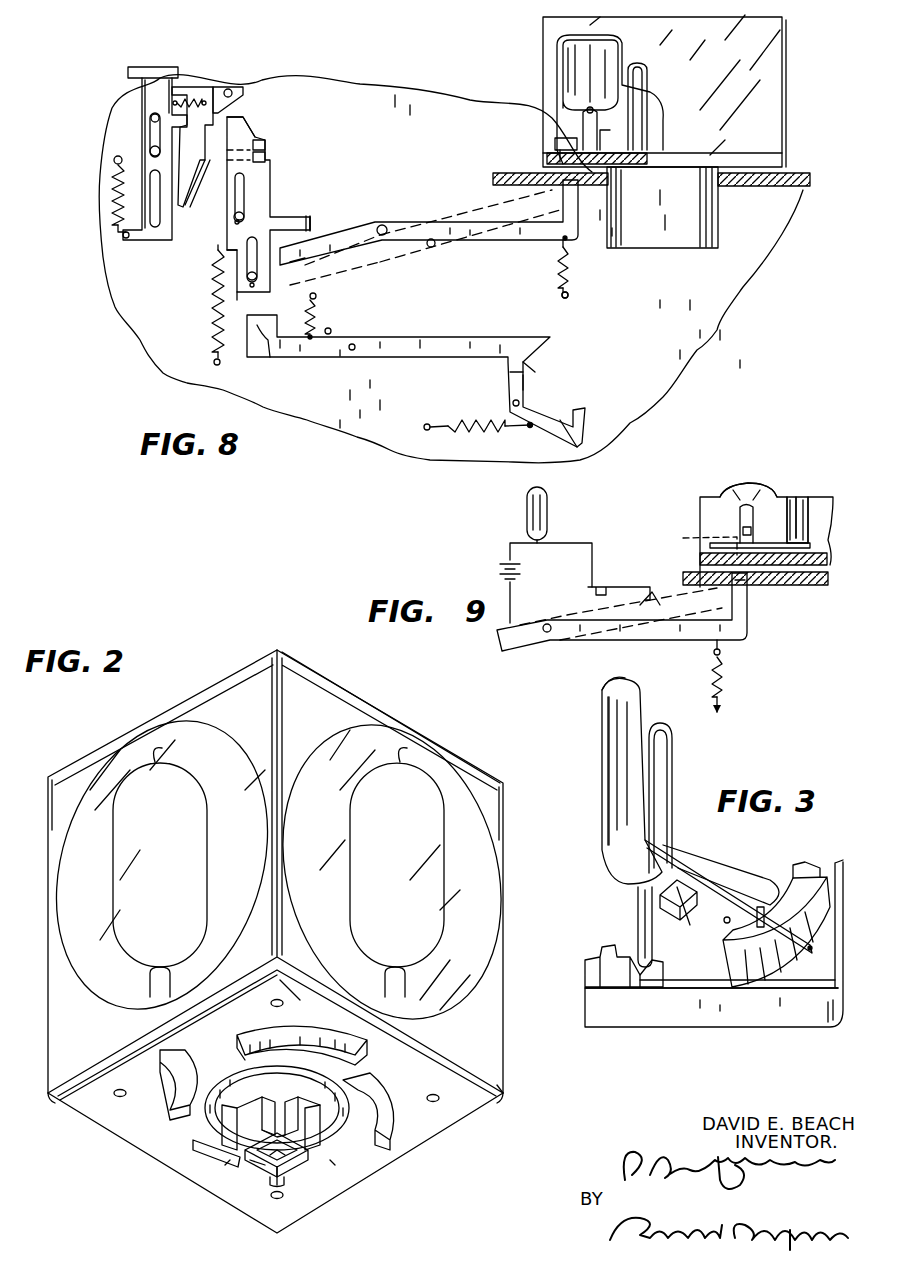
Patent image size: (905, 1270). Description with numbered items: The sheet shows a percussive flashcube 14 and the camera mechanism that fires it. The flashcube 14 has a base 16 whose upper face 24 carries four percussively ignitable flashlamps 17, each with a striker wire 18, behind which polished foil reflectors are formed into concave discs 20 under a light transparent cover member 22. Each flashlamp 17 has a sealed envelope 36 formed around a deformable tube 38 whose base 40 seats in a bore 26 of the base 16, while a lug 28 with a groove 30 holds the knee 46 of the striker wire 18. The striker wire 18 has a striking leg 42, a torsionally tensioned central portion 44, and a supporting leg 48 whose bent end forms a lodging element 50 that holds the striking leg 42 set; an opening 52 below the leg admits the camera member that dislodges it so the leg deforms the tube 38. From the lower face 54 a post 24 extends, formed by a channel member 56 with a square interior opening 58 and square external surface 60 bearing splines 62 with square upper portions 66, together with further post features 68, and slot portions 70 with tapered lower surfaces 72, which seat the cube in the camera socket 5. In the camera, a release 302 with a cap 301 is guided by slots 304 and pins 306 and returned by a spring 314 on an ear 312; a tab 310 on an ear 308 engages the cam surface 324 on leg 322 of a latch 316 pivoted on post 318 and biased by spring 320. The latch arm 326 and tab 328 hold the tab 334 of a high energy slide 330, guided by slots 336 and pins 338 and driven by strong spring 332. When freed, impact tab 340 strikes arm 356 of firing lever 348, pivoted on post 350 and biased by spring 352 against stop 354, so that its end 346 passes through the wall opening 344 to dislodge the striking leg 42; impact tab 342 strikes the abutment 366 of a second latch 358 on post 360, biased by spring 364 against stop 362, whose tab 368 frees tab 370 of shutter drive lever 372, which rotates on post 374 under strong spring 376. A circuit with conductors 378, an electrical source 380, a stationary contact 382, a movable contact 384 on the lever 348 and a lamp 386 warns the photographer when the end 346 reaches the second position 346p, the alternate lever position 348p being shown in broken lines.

In FIG. 8, the camera socket 5 is at (685, 240).
In FIG. 8, the flashcube 14 is at (785, 140).
In FIG. 9, the flashcube 14 is at (770, 485).
In FIG. 3, the flashcube 14 is at (597, 727).
In FIG. 2, the flashcube 14 is at (165, 700).
In FIG. 3, the base 16 is at (795, 1020).
In FIG. 2, the base 16 is at (495, 1083).
In FIG. 8, the flashlamp 17 is at (566, 72).
In FIG. 3, the flashlamp 17 is at (607, 770).
In FIG. 2, the flashlamp 17 is at (200, 805).
In FIG. 3, the striker wire 18 is at (745, 890).
In FIG. 2, the concave discs 20 is at (210, 740).
In FIG. 2, the cover member 22 is at (345, 690).
In FIG. 3, the post 24 is at (678, 990).
In FIG. 2, the post 24 is at (297, 1162).
In FIG. 3, the bore 26 is at (640, 988).
In FIG. 3, the lug 28 is at (678, 912).
In FIG. 3, the groove 30 is at (680, 872).
In FIG. 8, the envelope 36 is at (572, 58).
In FIG. 3, the envelope 36 is at (602, 750).
In FIG. 8, the tube 38 is at (575, 128).
In FIG. 9, the tube 38 is at (735, 484).
In FIG. 3, the tube 38 is at (640, 912).
In FIG. 2, the tube 38 is at (148, 980).
In FIG. 3, the base of tube 40 is at (667, 965).
In FIG. 8, the striking leg 42 is at (616, 145).
In FIG. 9, the striking leg 42 is at (740, 525).
In FIG. 3, the striking leg 42 is at (790, 950).
In FIG. 2, the striking leg 42 is at (262, 1025).
In FIG. 8, the central portion 44 is at (645, 92).
In FIG. 9, the central portion 44 is at (805, 518).
In FIG. 3, the central portion 44 is at (672, 770).
In FIG. 3, the knee 46 is at (694, 915).
In FIG. 3, the supporting leg 48 is at (724, 924).
In FIG. 8, the lodging element 50 is at (600, 100).
In FIG. 3, the lodging element 50 is at (762, 905).
In FIG. 8, the opening 52 is at (569, 141).
In FIG. 9, the opening 52 is at (764, 525).
In FIG. 3, the opening 52 is at (828, 905).
In FIG. 2, the opening 52 is at (307, 1030).
In FIG. 2, the lower face 54 is at (470, 1120).
In FIG. 2, the channel member 56 is at (288, 1178).
In FIG. 2, the square interior opening 58 is at (268, 1175).
In FIG. 2, the external surface 60 is at (255, 1168).
In FIG. 2, the splines 62 is at (300, 1085).
In FIG. 2, the upper portion 66 is at (345, 1100).
In FIG. 2, the post 68 is at (220, 1140).
In FIG. 2, the slot portions 70 is at (258, 1085).
In FIG. 2, the tapered lower surface 72 is at (277, 1135).
In FIG. 8, the cap 301 is at (150, 67).
In FIG. 8, the release 302 is at (140, 105).
In FIG. 8, the slots 304 is at (148, 120).
In FIG. 8, the pins 306 is at (150, 153).
In FIG. 8, the ear 308 is at (180, 117).
In FIG. 8, the tab 310 is at (199, 147).
In FIG. 8, the ear 312 is at (123, 240).
In FIG. 8, the spring 314 is at (113, 186).
In FIG. 8, the latch 316 is at (217, 110).
In FIG. 8, the post 318 is at (229, 89).
In FIG. 8, the spring 320 is at (188, 99).
In FIG. 8, the leg 322 is at (209, 190).
In FIG. 8, the cam surface 324 is at (218, 155).
In FIG. 8, the arm 326 is at (266, 156).
In FIG. 8, the tab 328 is at (266, 145).
In FIG. 8, the high energy slide 330 is at (262, 222).
In FIG. 8, the spring 332 is at (212, 300).
In FIG. 8, the tab 334 is at (250, 137).
In FIG. 8, the slots 336 is at (245, 190).
In FIG. 8, the pins 338 is at (235, 222).
In FIG. 8, the impact tab 340 is at (312, 224).
In FIG. 8, the impact tab 342 is at (238, 300).
In FIG. 8, the opening 344 is at (528, 175).
In FIG. 8, the end of firing lever 346 is at (580, 222).
In FIG. 9, the end of firing lever 346 is at (750, 602).
In FIG. 9, the second position 346p is at (737, 537).
In FIG. 8, the firing lever 348 is at (512, 236).
In FIG. 9, the firing lever 348 is at (620, 632).
In FIG. 8, the bar alternate position 348p is at (437, 215).
In FIG. 8, the post 350 is at (382, 224).
In FIG. 9, the post 350 is at (545, 622).
In FIG. 8, the spring 352 is at (568, 288).
In FIG. 9, the spring 352 is at (724, 670).
In FIG. 8, the stop 354 is at (433, 247).
In FIG. 8, the arm 356 is at (305, 262).
In FIG. 8, the second latch 358 is at (410, 353).
In FIG. 8, the post 360 is at (352, 351).
In FIG. 8, the stop 362 is at (331, 330).
In FIG. 8, the spring 364 is at (316, 316).
In FIG. 8, the abutment 366 is at (279, 363).
In FIG. 8, the tab 368 is at (533, 372).
In FIG. 8, the tab 370 is at (525, 382).
In FIG. 8, the shutter drive lever 372 is at (550, 423).
In FIG. 8, the post 374 is at (512, 403).
In FIG. 8, the spring 376 is at (443, 424).
In FIG. 9, the conductors 378 is at (583, 540).
In FIG. 9, the electrical source 380 is at (500, 570).
In FIG. 9, the stationary contact 382 is at (622, 585).
In FIG. 9, the movable contact 384 is at (650, 598).
In FIG. 9, the lamp 386 is at (527, 505).